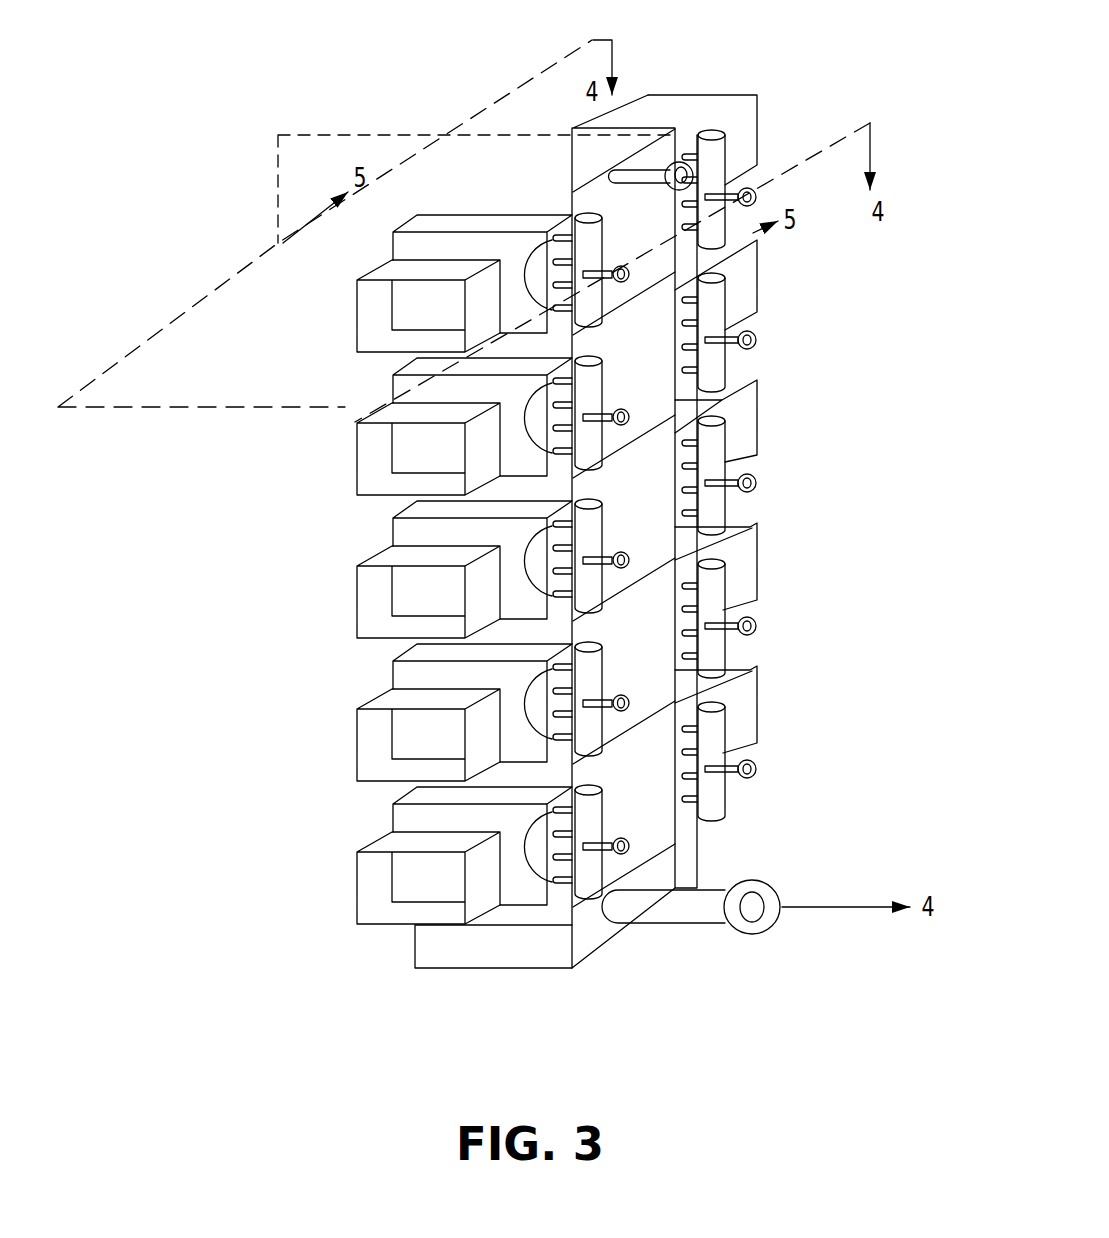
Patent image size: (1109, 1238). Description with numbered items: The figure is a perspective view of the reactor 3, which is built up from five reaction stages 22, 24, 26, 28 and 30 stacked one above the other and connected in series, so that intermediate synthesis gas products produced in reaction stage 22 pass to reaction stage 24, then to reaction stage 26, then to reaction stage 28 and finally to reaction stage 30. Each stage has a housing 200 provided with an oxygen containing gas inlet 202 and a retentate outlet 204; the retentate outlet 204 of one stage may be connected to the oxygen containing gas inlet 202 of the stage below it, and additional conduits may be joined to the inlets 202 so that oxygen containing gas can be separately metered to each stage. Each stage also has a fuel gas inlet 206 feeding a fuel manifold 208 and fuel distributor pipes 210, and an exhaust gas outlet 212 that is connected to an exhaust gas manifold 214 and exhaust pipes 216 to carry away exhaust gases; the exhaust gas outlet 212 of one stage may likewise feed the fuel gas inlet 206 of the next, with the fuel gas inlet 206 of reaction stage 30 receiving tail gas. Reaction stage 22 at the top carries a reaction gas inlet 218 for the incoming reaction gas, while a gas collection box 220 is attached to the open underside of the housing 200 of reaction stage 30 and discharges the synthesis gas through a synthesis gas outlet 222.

The reactor 3 is at (262, 722).
The reaction stage 22 is at (659, 160).
The reaction stage 24 is at (652, 378).
The reaction stage 26 is at (650, 542).
The reaction stage 28 is at (637, 682).
The reaction stage 30 is at (635, 816).
The housing 200 is at (470, 148).
The oxygen containing gas inlet 202 is at (373, 313).
The retentate outlet 204 is at (748, 127).
The fuel gas inlet 206 is at (608, 270).
The fuel manifold 208 is at (604, 238).
The fuel distributor pipes 210 is at (553, 284).
The exhaust gas outlet 212 is at (758, 197).
The exhaust gas manifold 214 is at (718, 176).
The exhaust pipes 216 is at (706, 165).
The reaction gas inlet 218 is at (683, 163).
The gas collection box 220 is at (533, 947).
The synthesis gas outlet 222 is at (692, 912).